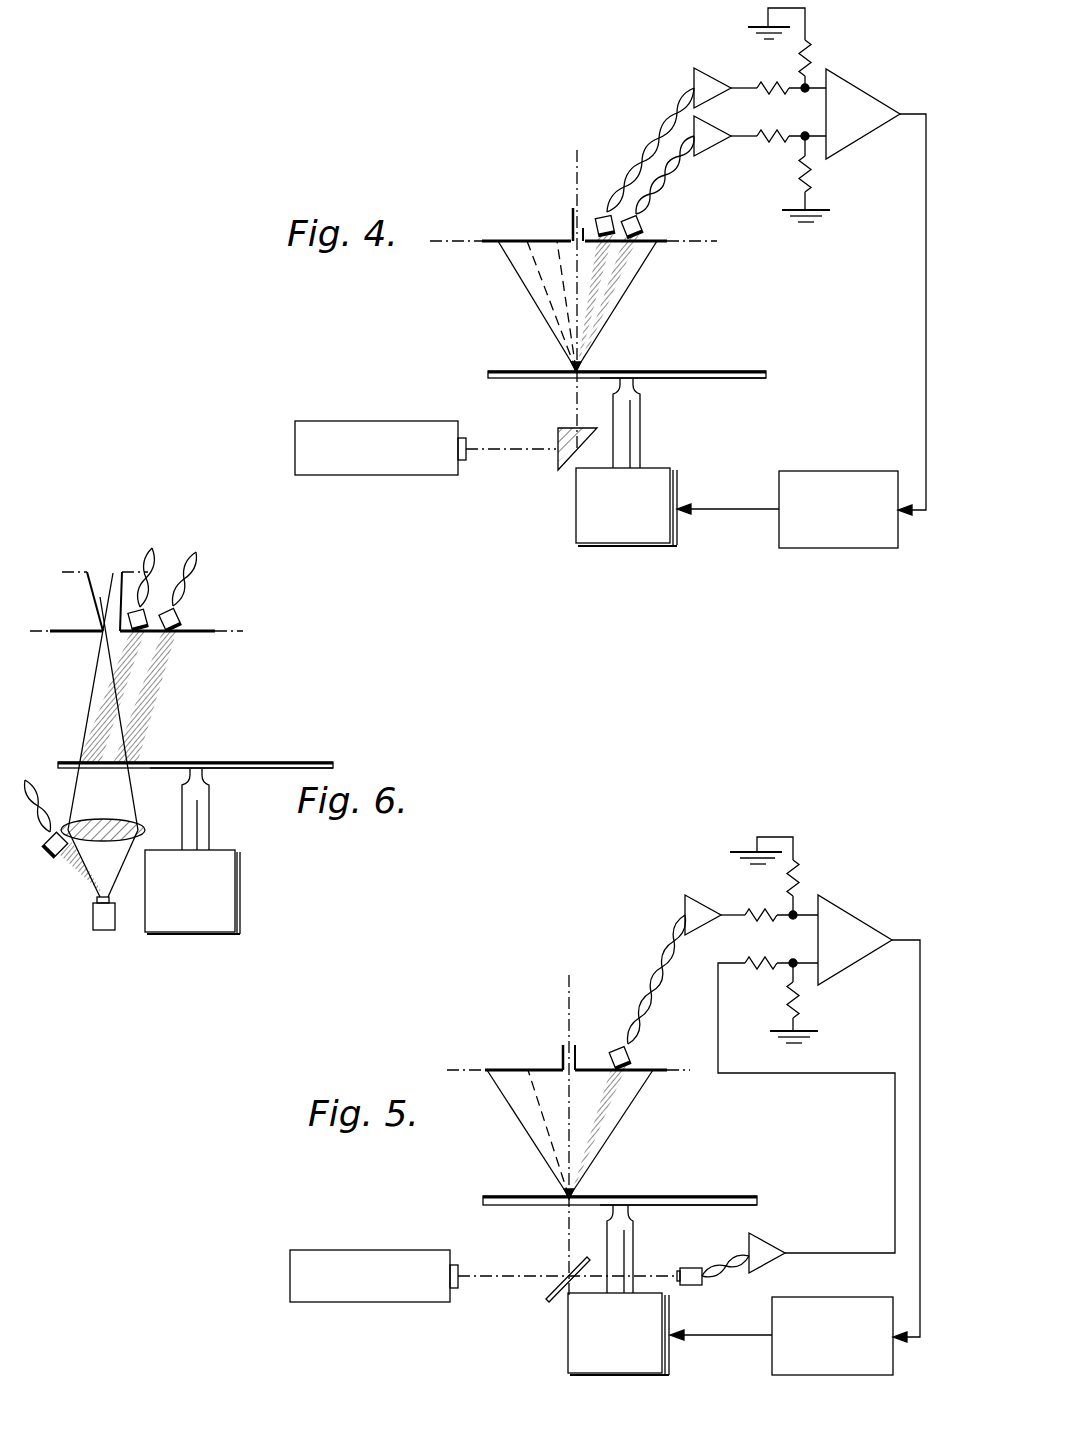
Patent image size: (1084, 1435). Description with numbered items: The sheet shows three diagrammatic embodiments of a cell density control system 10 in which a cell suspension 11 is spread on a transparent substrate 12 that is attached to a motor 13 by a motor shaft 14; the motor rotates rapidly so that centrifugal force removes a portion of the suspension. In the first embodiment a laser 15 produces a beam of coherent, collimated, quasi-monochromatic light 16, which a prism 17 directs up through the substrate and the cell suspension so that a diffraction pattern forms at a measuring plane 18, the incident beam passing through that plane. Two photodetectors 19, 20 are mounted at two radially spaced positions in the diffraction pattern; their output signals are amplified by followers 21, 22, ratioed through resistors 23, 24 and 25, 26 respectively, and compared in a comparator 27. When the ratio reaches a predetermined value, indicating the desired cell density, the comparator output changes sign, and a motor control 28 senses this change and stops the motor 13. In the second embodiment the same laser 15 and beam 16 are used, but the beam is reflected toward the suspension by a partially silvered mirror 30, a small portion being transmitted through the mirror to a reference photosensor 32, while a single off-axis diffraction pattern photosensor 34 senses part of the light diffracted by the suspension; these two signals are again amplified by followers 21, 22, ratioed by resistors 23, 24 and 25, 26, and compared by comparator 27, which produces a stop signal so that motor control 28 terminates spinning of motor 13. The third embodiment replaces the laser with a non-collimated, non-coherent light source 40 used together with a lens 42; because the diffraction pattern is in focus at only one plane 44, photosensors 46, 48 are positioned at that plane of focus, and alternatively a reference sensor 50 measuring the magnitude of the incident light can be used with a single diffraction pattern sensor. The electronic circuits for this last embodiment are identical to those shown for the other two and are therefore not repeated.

In FIG. 4, the cell density control system 10 is at (384, 328).
In FIG. 4, the cell suspension 11 is at (692, 370).
In FIG. 6, the cell suspension 11 is at (222, 760).
In FIG. 5, the cell suspension 11 is at (678, 1195).
In FIG. 4, the transparent substrate 12 is at (718, 380).
In FIG. 6, the transparent substrate 12 is at (240, 771).
In FIG. 5, the transparent substrate 12 is at (728, 1206).
In FIG. 4, the motor 13 is at (680, 482).
In FIG. 6, the motor 13 is at (222, 861).
In FIG. 5, the motor 13 is at (655, 1355).
In FIG. 4, the motor shaft 14 is at (627, 426).
In FIG. 6, the motor shaft 14 is at (201, 815).
In FIG. 5, the motor shaft 14 is at (625, 1252).
In FIG. 4, the laser 15 is at (372, 421).
In FIG. 5, the laser 15 is at (370, 1250).
In FIG. 4, the light beam 16 is at (497, 452).
In FIG. 5, the light beam 16 is at (490, 1278).
In FIG. 4, the prism 17 is at (557, 438).
In FIG. 4, the measuring plane 18 is at (480, 244).
In FIG. 5, the measuring plane 18 is at (513, 1068).
In FIG. 4, the photodetector 19 is at (600, 216).
In FIG. 4, the photodetector 20 is at (643, 231).
In FIG. 4, the follower 21 is at (706, 78).
In FIG. 5, the follower 21 is at (696, 895).
In FIG. 4, the follower 22 is at (706, 130).
In FIG. 5, the follower 22 is at (770, 1261).
In FIG. 4, the resistor 23 is at (769, 84).
In FIG. 5, the resistor 23 is at (755, 910).
In FIG. 4, the resistor 24 is at (812, 46).
In FIG. 5, the resistor 24 is at (796, 873).
In FIG. 4, the resistor 25 is at (763, 145).
In FIG. 5, the resistor 25 is at (750, 958).
In FIG. 4, the resistor 26 is at (800, 181).
In FIG. 5, the resistor 26 is at (800, 1003).
In FIG. 4, the comparator 27 is at (860, 86).
In FIG. 5, the comparator 27 is at (843, 905).
In FIG. 4, the motor control 28 is at (779, 538).
In FIG. 5, the motor control 28 is at (772, 1318).
In FIG. 5, the partially silvered mirror 30 is at (555, 1278).
In FIG. 5, the reference photosensor 32 is at (688, 1268).
In FIG. 5, the diffraction pattern photosensor 34 is at (617, 1050).
In FIG. 6, the light source 40 is at (93, 921).
In FIG. 6, the lens 42 is at (118, 827).
In FIG. 6, the plane of focus 44 is at (62, 633).
In FIG. 6, the photosensor 46 is at (137, 607).
In FIG. 6, the photosensor 48 is at (183, 618).
In FIG. 6, the reference sensor 50 is at (48, 856).